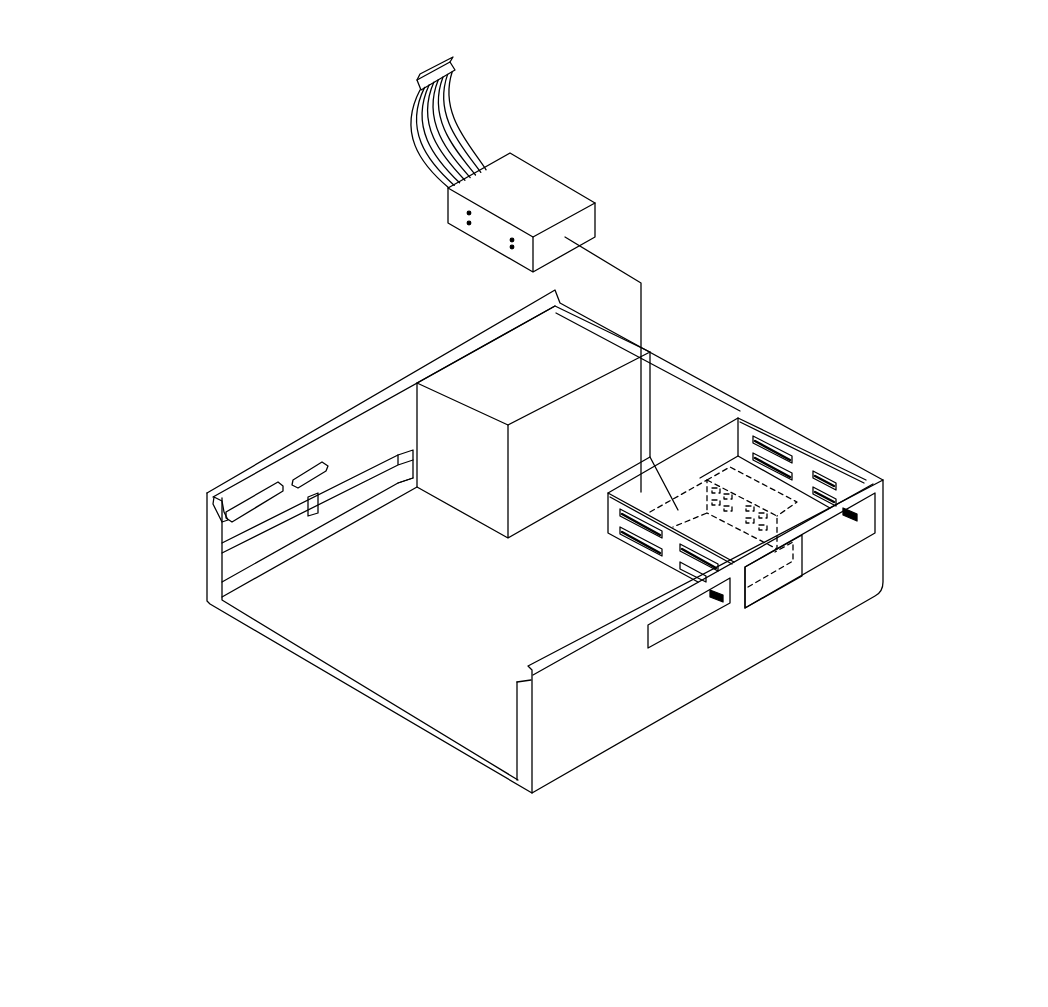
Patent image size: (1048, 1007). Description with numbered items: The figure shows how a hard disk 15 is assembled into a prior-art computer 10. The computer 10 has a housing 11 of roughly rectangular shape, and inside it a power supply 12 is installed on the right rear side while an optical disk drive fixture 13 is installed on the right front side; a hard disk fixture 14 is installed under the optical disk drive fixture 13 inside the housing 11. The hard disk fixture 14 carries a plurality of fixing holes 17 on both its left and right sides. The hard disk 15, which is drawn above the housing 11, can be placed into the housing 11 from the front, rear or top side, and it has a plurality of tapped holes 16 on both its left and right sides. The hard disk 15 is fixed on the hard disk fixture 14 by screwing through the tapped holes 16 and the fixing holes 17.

The computer 10 is at (887, 200).
The housing 11 is at (362, 545).
The power supply 12 is at (505, 368).
The optical disk drive fixture 13 is at (670, 550).
The hard disk fixture 14 is at (773, 562).
The hard disk 15 is at (520, 175).
The tapped holes 16 is at (513, 240).
The fixing holes 17 is at (737, 497).